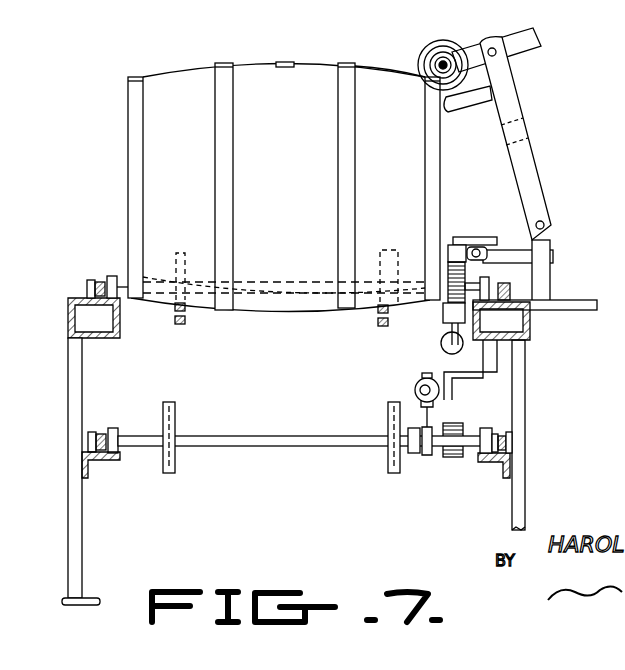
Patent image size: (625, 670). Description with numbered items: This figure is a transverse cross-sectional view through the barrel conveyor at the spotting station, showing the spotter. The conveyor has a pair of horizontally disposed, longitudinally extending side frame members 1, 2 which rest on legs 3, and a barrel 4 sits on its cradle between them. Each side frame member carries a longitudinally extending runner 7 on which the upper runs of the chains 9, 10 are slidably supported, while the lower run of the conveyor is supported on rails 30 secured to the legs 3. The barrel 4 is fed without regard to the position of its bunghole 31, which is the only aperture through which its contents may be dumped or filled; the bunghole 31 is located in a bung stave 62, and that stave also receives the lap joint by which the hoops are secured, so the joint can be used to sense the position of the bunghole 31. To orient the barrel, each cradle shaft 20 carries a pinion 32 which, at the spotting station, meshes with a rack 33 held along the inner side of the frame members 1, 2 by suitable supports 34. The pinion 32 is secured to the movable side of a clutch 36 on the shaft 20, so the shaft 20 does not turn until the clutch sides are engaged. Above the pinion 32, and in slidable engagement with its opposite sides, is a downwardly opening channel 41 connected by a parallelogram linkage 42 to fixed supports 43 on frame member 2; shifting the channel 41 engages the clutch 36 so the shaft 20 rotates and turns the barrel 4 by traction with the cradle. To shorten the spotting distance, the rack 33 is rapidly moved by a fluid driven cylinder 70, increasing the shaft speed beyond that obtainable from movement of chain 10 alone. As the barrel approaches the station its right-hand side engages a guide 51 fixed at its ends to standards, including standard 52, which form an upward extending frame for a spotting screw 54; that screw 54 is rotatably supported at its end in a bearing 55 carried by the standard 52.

The side frame member 1 is at (66, 311).
The side frame member 2 is at (533, 330).
The legs 3 is at (72, 395).
The barrel 4 is at (170, 68).
The runner 7 is at (78, 300).
The chain 9 is at (92, 282).
The chain 10 is at (514, 444).
The shaft 20 is at (300, 294).
The rails 30 is at (100, 470).
The bunghole 31 is at (284, 62).
The pinion 32 is at (447, 268).
The rack 33 is at (442, 312).
The supports 34 is at (441, 345).
The clutch 36 is at (396, 258).
The channel 41 is at (450, 240).
The parallelogram linkage 42 is at (482, 245).
The fixed supports 43 is at (548, 278).
The guide 51 is at (460, 112).
The standard 52 is at (520, 125).
The spotting screw 54 is at (443, 42).
The bearing 55 is at (470, 52).
The bung stave 62 is at (372, 72).
The fluid driven cylinder 70 is at (443, 376).